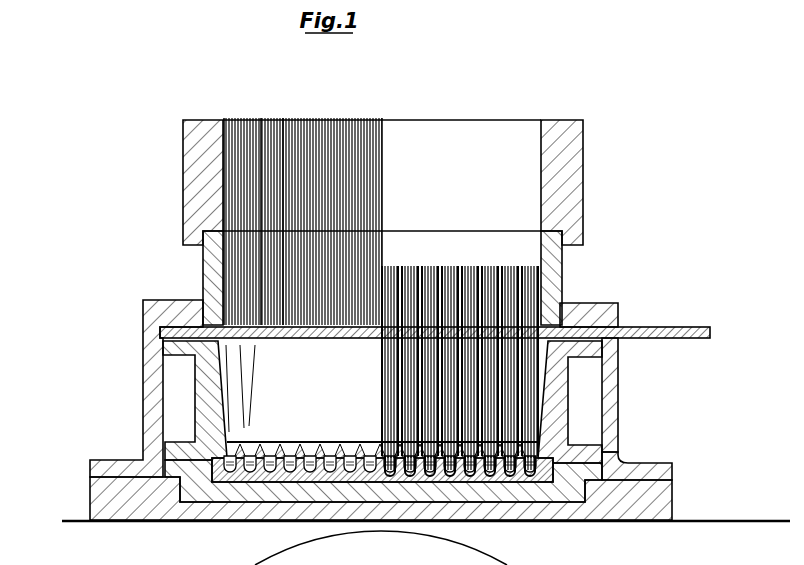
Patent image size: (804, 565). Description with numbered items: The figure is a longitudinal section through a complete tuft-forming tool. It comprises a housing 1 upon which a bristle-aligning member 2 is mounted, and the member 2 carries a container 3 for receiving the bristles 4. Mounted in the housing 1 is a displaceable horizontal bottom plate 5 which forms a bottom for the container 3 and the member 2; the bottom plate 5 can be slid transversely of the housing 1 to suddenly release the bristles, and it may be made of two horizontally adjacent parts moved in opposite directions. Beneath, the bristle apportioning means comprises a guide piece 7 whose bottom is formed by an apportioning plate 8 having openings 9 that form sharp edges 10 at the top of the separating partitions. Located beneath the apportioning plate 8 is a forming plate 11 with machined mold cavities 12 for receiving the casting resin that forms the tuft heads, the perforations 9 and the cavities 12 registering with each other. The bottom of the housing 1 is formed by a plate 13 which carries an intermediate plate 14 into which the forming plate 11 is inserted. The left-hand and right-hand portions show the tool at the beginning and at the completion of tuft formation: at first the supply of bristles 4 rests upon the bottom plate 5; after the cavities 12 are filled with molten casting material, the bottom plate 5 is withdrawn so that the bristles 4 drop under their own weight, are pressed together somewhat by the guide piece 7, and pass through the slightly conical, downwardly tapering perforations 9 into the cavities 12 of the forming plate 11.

The housing 1 is at (612, 356).
The bristle-aligning member 2 is at (553, 270).
The container 3 is at (568, 150).
The bristles 4 is at (300, 125).
The bottom plate 5 is at (166, 332).
The guide piece 7 is at (558, 398).
The apportioning plate 8 is at (229, 452).
The openings 9 is at (250, 447).
The sharp edges 10 is at (279, 450).
The forming plate 11 is at (185, 508).
The mold cavities 12 is at (268, 488).
The plate 13 is at (660, 495).
The intermediate plate 14 is at (603, 466).